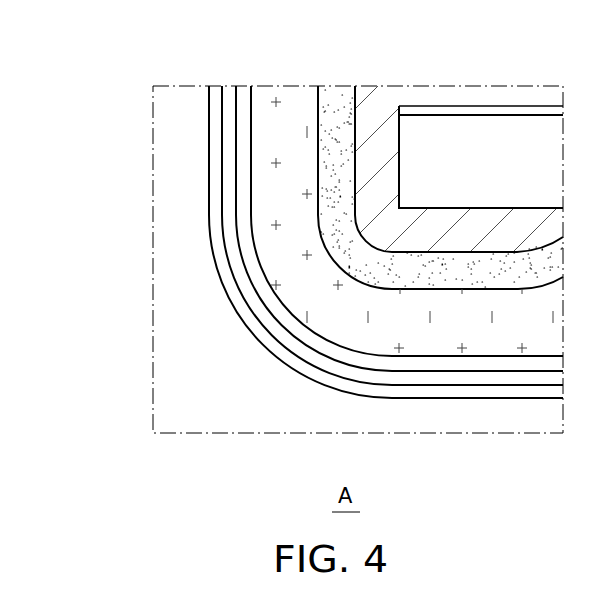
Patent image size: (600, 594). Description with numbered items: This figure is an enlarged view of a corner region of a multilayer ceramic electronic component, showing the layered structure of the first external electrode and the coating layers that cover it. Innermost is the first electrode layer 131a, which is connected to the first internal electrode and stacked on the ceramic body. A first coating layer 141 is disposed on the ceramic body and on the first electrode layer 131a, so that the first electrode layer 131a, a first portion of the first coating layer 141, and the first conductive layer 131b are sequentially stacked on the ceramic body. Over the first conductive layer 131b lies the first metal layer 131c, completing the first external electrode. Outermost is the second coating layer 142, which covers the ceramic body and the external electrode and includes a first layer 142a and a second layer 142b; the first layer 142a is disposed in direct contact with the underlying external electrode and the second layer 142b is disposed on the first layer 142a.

The second coating layer 142 is at (67, 92).
The first layer 142a is at (232, 97).
The second layer 142b is at (214, 125).
The first metal layer 131c is at (240, 156).
The first conductive layer 131b is at (268, 195).
The first electrode layer 131a is at (376, 100).
The first coating layer 141 is at (338, 233).